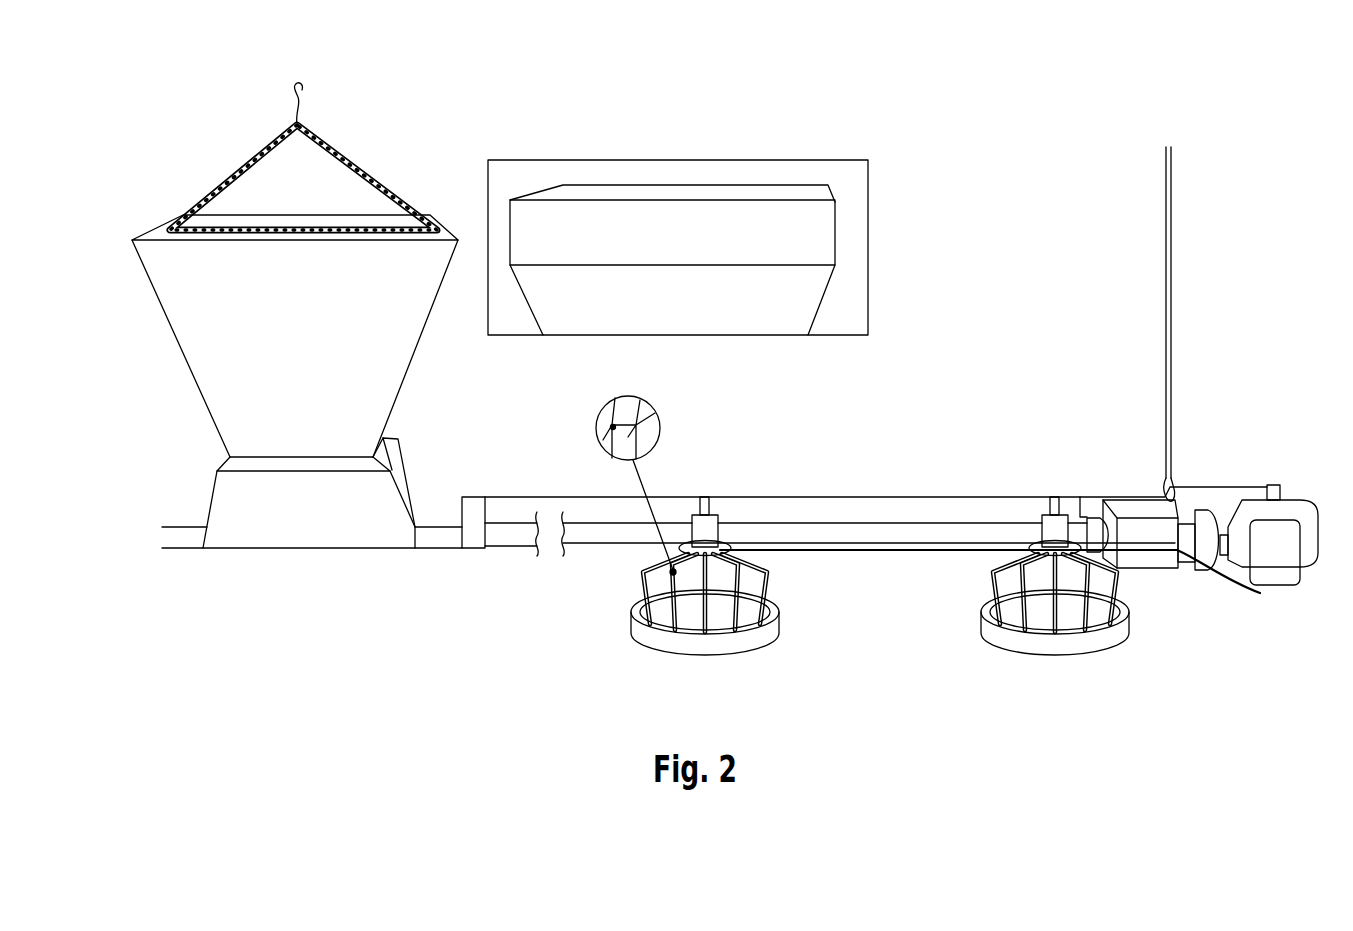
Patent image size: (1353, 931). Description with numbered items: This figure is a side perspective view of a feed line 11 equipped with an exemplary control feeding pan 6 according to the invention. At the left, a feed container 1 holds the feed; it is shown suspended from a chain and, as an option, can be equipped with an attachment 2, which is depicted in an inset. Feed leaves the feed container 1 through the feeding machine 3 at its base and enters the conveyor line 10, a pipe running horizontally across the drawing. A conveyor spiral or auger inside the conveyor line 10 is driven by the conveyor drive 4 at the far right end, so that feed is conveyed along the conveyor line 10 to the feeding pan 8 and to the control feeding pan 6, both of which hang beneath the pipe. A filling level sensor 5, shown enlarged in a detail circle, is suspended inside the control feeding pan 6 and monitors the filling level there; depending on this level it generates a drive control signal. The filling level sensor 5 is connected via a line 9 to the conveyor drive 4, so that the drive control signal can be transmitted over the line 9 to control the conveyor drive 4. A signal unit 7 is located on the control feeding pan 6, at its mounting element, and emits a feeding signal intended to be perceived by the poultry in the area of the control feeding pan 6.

The feed container 1 is at (367, 353).
The attachment 2 is at (800, 245).
The feeding machine 3 is at (330, 533).
The conveyor drive 4 is at (1200, 520).
The filling level sensor 5 is at (592, 428).
The control feeding pan 6 is at (776, 609).
The signal unit 7 is at (707, 528).
The feeding pan 8 is at (1055, 648).
The line 9 is at (948, 547).
The conveyor line 10 is at (927, 533).
The feed line 11 is at (997, 220).